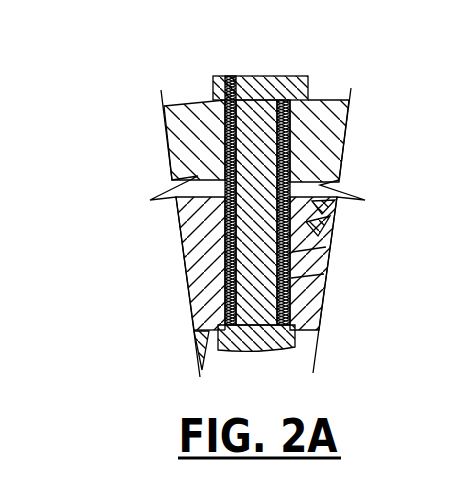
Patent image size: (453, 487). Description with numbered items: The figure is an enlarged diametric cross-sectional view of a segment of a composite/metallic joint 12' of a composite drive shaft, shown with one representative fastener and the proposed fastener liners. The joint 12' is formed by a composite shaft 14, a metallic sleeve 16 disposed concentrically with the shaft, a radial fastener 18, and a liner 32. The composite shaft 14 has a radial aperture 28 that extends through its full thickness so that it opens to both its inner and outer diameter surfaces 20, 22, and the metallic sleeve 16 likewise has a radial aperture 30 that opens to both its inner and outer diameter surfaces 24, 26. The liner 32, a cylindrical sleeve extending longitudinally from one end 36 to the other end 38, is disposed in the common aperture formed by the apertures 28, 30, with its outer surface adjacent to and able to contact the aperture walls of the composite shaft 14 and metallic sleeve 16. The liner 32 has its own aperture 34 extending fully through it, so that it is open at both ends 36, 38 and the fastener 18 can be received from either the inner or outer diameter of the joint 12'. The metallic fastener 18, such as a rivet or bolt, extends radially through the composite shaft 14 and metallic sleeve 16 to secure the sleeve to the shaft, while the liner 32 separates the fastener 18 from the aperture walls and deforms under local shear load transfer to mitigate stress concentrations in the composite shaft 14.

The composite/metallic joint 12' is at (221, 212).
The composite shaft 14 is at (323, 300).
The metallic sleeve 16 is at (340, 127).
The fastener 18 is at (258, 77).
The inner diameter surface 20 is at (203, 366).
The outer diameter surface 22 is at (330, 212).
The inner diameter surface 24 is at (323, 249).
The outer diameter surface 26 is at (333, 99).
The aperture 28 is at (199, 330).
The aperture 30 is at (188, 219).
The liner 32 is at (297, 156).
The aperture 34 is at (318, 292).
The end 36 is at (232, 77).
The end 38 is at (284, 346).